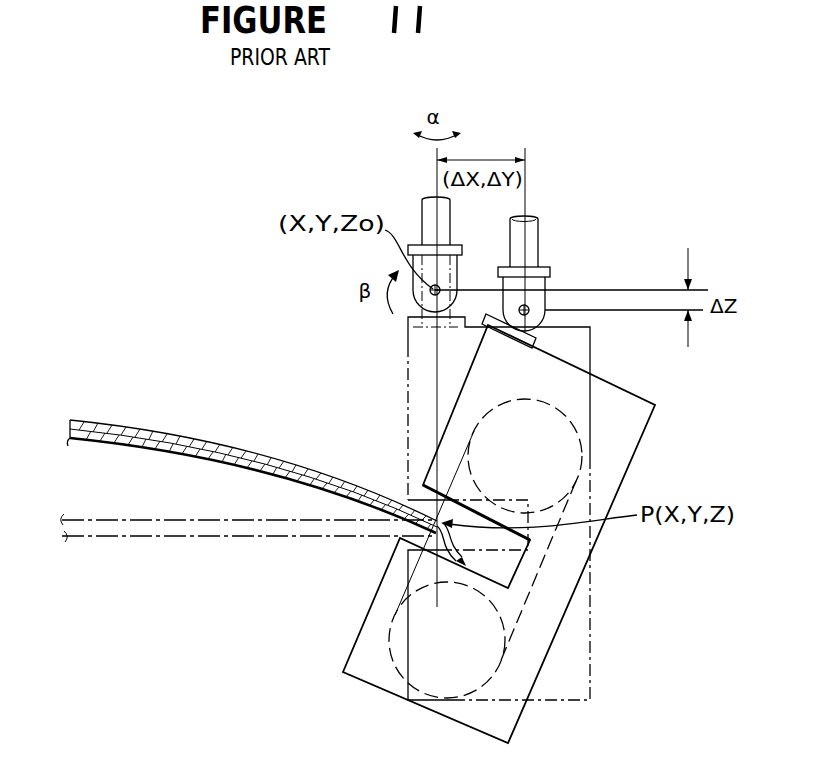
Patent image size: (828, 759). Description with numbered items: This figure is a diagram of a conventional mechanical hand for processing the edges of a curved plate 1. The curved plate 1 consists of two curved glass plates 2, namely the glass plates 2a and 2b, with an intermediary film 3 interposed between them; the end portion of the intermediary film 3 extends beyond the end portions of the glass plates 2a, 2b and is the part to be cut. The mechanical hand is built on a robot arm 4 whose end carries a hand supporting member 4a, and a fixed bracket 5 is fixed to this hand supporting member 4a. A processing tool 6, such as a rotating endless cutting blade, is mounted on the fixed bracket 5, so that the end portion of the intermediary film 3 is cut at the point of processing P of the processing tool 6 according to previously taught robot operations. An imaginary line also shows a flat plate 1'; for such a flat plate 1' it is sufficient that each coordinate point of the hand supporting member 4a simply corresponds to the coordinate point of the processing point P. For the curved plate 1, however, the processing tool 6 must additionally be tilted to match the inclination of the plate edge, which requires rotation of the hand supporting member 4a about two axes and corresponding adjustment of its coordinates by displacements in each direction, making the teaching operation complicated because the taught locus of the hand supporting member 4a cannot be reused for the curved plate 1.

The curved plate 1 is at (252, 449).
The curved glass plates 2 is at (252, 461).
The curved glass plate 2a is at (256, 452).
The curved glass plate 2b is at (222, 465).
The flat plate 1' is at (246, 557).
The intermediary film 3 is at (440, 560).
The robot arm 4 is at (540, 267).
The hand supporting member 4a is at (527, 306).
The fixed bracket 5 is at (632, 450).
The processing tool 6 is at (463, 455).